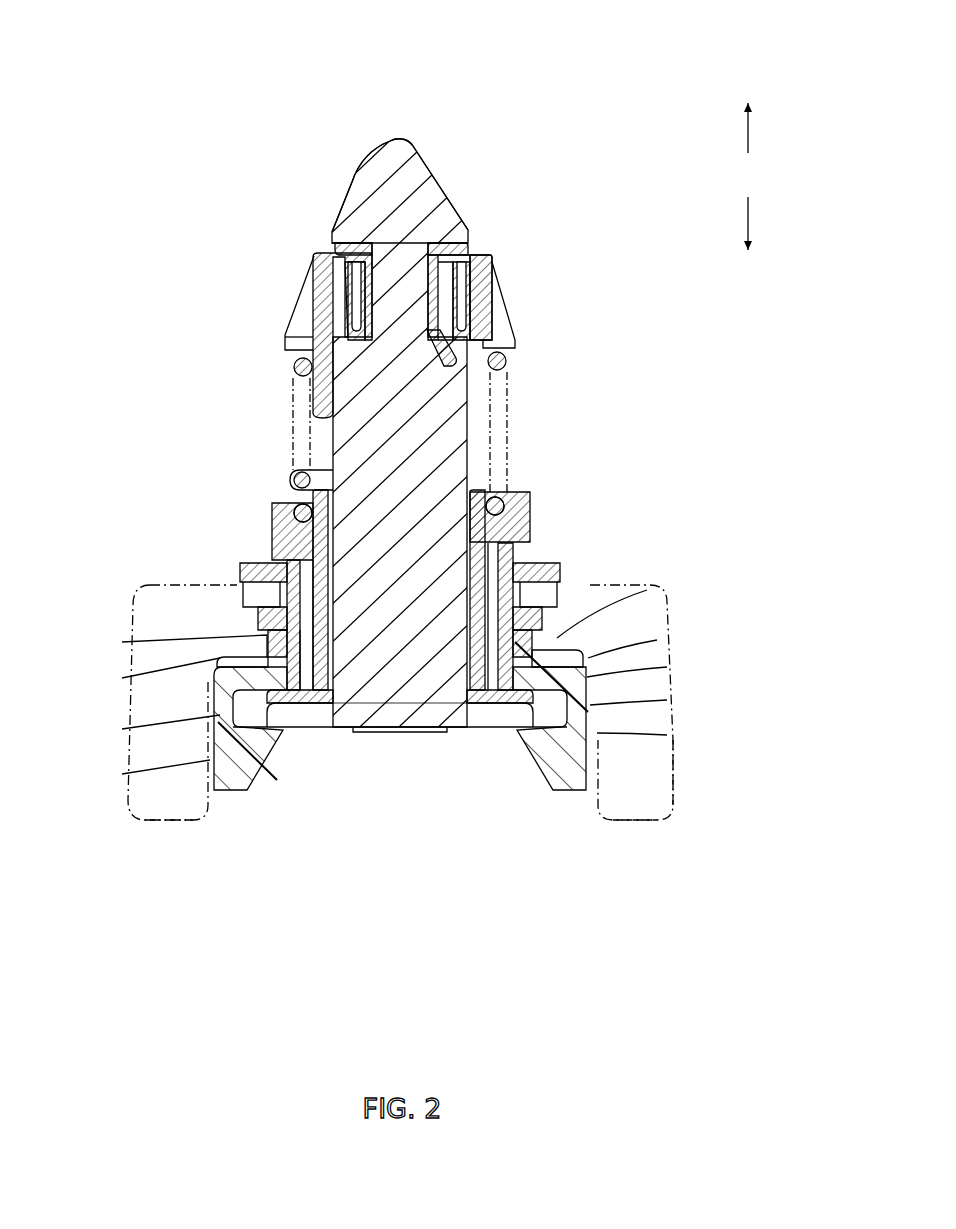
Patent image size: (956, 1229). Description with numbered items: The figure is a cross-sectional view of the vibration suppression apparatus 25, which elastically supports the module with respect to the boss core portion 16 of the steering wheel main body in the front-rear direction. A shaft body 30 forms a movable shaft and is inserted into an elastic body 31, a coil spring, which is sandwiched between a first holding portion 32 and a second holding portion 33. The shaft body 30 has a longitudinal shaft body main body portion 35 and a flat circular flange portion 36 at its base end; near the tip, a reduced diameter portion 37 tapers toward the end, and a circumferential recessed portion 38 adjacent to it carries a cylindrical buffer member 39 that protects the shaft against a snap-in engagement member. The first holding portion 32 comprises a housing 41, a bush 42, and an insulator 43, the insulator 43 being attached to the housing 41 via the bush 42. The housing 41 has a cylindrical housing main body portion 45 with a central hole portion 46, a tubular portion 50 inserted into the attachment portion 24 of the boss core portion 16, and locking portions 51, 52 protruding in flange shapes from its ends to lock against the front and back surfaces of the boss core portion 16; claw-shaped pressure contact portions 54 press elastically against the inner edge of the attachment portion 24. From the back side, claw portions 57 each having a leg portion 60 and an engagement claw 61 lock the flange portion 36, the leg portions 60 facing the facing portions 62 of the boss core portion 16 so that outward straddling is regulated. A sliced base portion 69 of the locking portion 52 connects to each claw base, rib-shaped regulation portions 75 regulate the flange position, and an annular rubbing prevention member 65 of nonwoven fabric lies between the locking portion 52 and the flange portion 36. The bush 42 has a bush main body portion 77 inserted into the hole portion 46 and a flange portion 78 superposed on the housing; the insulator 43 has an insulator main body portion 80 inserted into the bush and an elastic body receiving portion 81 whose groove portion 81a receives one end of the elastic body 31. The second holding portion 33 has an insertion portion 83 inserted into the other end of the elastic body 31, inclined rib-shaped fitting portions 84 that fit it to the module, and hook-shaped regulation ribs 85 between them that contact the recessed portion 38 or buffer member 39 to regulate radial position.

The boss core portion 16 is at (673, 778).
The attachment portion 24 is at (550, 618).
The vibration suppression apparatus 25 is at (556, 64).
The shaft body 30 is at (414, 137).
The elastic body 31 is at (509, 445).
The first holding portion 32 is at (667, 735).
The second holding portion 33 is at (489, 266).
The shaft body main body portion 35 is at (441, 437).
The flange portion 36 is at (478, 733).
The reduced diameter portion 37 is at (440, 188).
The recessed portion 38 is at (472, 250).
The buffer member 39 is at (471, 318).
The housing 41 is at (124, 773).
The bush 42 is at (270, 547).
The insulator 43 is at (284, 500).
The housing main body portion 45 is at (124, 677).
The hole portion 46 is at (298, 660).
The tubular portion 50 is at (647, 590).
The locking portion 51 is at (259, 568).
The locking portion 52 is at (667, 667).
The pressure contact portion 54 is at (252, 608).
The claw portion 57 is at (228, 793).
The leg portion 60 is at (124, 728).
The engagement claw 61 is at (251, 766).
The facing portion 62 is at (160, 821).
The rubbing prevention member 65 is at (465, 729).
The base portion 69 is at (657, 640).
The regulation portion 75 is at (401, 734).
The bush main body portion 77 is at (124, 641).
The flange portion 78 is at (279, 548).
The insulator main body portion 80 is at (337, 692).
The elastic body receiving portion 81 is at (527, 515).
The groove portion 81a is at (504, 483).
The insertion portion 83 is at (292, 367).
The fitting portion 84 is at (311, 280).
The regulation rib 85 is at (498, 291).